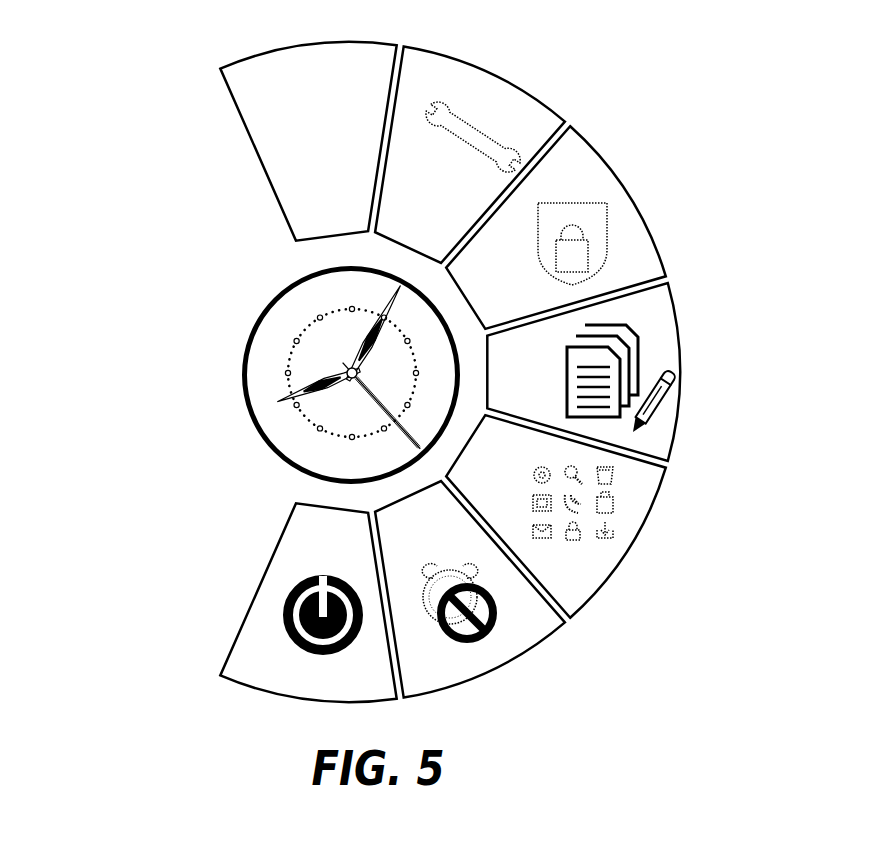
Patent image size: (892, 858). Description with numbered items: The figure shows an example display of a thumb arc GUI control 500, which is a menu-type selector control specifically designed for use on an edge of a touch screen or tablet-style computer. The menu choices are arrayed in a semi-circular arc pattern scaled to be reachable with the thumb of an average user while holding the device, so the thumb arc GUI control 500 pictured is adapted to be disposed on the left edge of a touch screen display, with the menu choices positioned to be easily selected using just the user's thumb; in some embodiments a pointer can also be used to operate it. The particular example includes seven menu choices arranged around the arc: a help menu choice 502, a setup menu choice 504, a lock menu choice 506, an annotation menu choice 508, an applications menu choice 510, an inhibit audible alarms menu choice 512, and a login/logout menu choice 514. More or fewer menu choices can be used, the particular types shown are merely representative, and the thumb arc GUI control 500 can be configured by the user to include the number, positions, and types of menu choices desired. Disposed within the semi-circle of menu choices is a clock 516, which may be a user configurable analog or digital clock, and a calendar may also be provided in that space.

The thumb arc GUI control 500 is at (140, 125).
The help menu choice 502 is at (277, 48).
The setup menu choice 504 is at (510, 82).
The lock menu choice 506 is at (662, 252).
The annotation menu choice 508 is at (683, 367).
The applications menu choice 510 is at (635, 547).
The inhibit audible alarms menu choice 512 is at (490, 673).
The login/logout menu choice 514 is at (278, 697).
The clock 516 is at (273, 457).